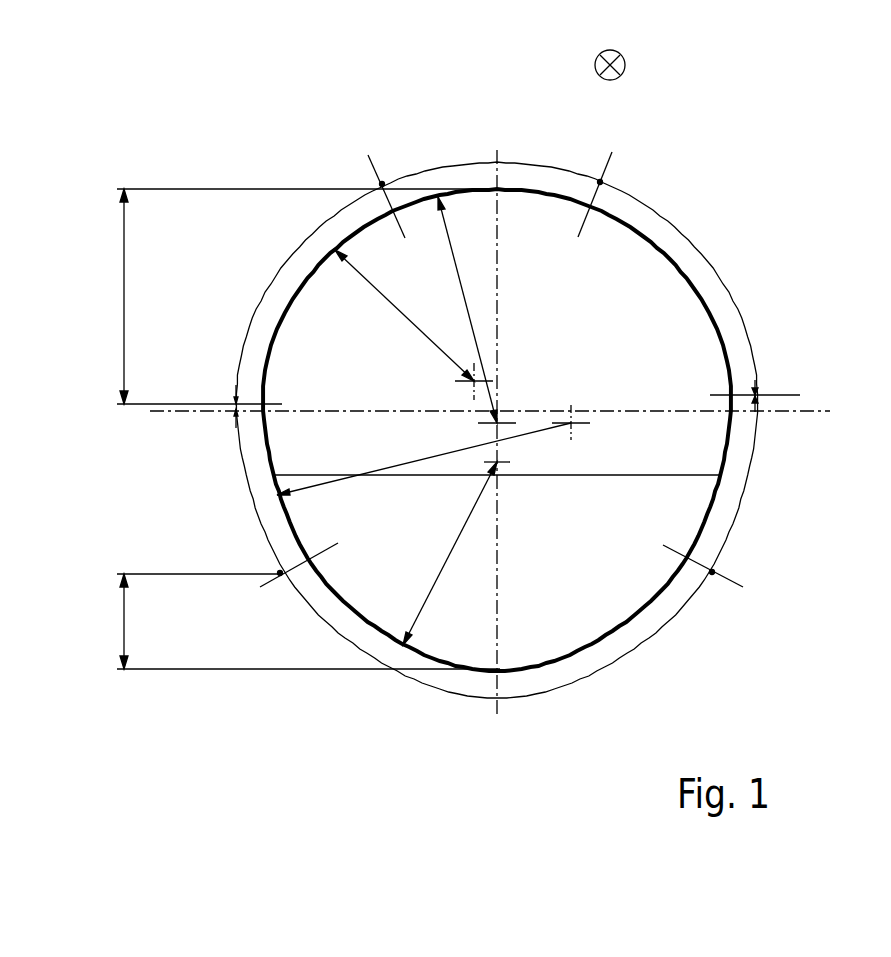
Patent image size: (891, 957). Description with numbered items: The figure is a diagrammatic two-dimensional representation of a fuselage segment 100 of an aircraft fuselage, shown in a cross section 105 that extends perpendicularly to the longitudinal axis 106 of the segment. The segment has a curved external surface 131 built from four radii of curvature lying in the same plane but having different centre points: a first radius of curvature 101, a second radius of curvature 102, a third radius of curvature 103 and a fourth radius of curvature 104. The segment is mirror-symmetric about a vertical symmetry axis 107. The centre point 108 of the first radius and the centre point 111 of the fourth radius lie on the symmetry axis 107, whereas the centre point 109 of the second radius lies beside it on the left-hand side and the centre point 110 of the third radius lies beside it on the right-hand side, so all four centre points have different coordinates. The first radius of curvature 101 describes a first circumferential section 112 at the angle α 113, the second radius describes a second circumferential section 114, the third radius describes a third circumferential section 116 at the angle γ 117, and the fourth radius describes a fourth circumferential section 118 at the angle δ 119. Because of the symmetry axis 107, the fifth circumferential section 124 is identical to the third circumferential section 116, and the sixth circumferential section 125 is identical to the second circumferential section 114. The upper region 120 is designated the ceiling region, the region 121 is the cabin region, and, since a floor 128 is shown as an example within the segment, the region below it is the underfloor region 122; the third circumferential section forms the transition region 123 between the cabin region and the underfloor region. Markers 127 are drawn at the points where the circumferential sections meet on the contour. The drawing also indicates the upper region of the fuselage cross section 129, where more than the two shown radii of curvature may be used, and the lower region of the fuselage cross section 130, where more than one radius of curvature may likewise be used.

The fuselage segment 100 is at (177, 100).
The first radius of curvature 101 is at (465, 292).
The second radius of curvature 102 is at (395, 303).
The third radius of curvature 103 is at (293, 487).
The fourth radius of curvature 104 is at (443, 563).
The cross section 105 is at (260, 80).
The longitudinal axis 106 is at (626, 66).
The vertical symmetry axis 107 is at (500, 548).
The centre point of the first radius of curvature 108 is at (500, 422).
The centre point of the second radius of curvature 109 is at (472, 381).
The centre point of the third radius of curvature 110 is at (574, 420).
The centre point of the fourth radius of curvature 111 is at (500, 466).
The first circumferential section 112 is at (544, 190).
The angle α 113 is at (498, 128).
The second circumferential section 114 is at (670, 245).
The third circumferential section 116 is at (717, 507).
The angle γ 117 is at (778, 492).
The fourth circumferential section 118 is at (752, 270).
The angle δ 119 is at (497, 742).
The upper region 120 is at (431, 130).
The cabin region 121 is at (218, 312).
The underfloor region 122 is at (250, 682).
The transition region 123 is at (188, 508).
The fifth circumferential section 124 is at (273, 513).
The sixth circumferential section 125 is at (299, 282).
The transition points 127 is at (370, 160).
The floor 128 is at (660, 475).
The upper region of the fuselage cross section 129 is at (123, 292).
The lower region of the fuselage cross section 130 is at (123, 618).
The curved external surface 131 is at (394, 731).